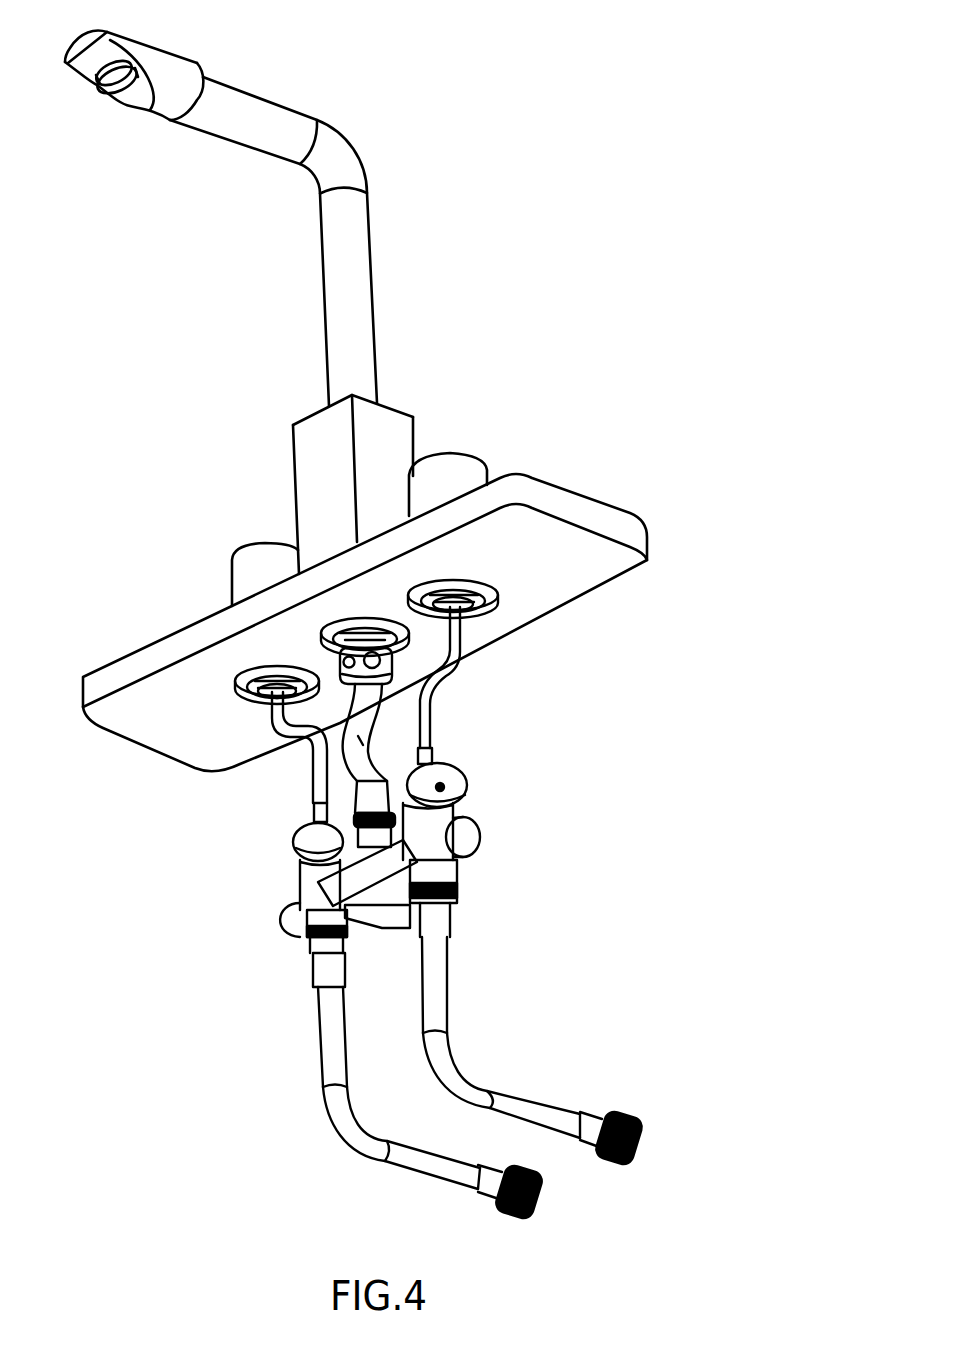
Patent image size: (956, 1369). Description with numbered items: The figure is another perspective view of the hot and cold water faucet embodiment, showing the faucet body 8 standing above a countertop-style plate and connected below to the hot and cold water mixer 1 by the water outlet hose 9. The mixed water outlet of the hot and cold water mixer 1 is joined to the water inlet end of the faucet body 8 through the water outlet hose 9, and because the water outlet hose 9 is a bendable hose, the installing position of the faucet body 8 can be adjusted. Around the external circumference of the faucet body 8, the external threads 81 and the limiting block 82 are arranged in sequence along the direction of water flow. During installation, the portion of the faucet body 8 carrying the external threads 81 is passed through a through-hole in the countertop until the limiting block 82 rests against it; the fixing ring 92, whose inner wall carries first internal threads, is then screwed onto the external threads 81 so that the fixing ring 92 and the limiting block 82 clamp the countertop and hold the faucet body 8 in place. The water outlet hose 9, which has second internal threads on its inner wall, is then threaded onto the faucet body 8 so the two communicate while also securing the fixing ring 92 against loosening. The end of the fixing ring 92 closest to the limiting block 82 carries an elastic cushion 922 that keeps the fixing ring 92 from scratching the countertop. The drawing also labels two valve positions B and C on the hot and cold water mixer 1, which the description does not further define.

The faucet body 8 is at (337, 305).
The limiting block 82 is at (377, 457).
The external threads 81 is at (405, 627).
The elastic cushion 922 is at (372, 625).
The fixing ring 92 is at (340, 660).
The water outlet hose 9 is at (345, 718).
The valve C is at (460, 783).
The valve B is at (297, 843).
The hot and cold water mixer 1 is at (337, 890).